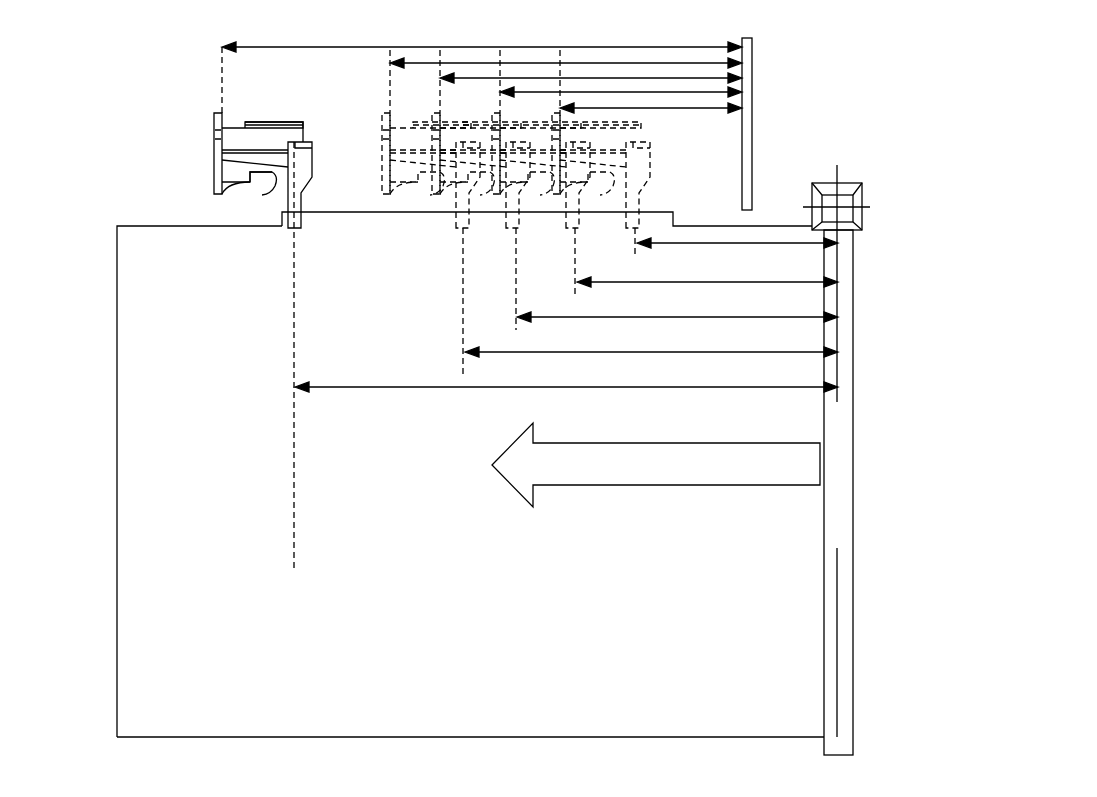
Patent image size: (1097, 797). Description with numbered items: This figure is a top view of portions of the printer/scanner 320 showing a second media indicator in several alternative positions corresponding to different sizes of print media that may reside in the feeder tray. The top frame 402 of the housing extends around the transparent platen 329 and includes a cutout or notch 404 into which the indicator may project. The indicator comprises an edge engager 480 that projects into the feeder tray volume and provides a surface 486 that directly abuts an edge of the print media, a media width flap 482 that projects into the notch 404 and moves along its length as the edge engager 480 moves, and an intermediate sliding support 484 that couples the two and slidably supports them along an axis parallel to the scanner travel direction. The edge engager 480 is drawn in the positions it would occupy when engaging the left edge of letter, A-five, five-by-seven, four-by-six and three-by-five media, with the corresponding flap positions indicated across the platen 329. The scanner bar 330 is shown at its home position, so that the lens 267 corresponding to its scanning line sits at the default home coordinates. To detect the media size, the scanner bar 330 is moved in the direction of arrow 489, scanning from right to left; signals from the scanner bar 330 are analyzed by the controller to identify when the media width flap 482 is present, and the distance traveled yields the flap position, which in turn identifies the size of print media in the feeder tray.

The printer/scanner 320 is at (107, 122).
The top frame 402 is at (173, 227).
The notch 404 is at (370, 214).
The transparent platen 329 is at (703, 722).
The edge engager 480 is at (213, 128).
The media width flap 482 is at (288, 230).
The intermediate sliding support 484 is at (262, 195).
The surface 486 is at (224, 118).
The arrow 489 is at (643, 486).
The lens 267 is at (838, 270).
The scanner bar 330 is at (853, 628).